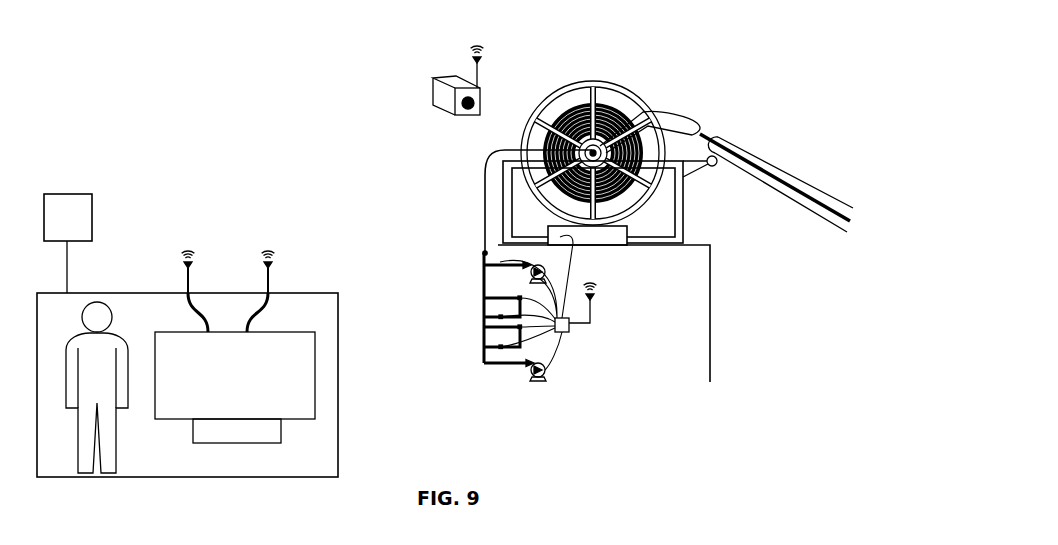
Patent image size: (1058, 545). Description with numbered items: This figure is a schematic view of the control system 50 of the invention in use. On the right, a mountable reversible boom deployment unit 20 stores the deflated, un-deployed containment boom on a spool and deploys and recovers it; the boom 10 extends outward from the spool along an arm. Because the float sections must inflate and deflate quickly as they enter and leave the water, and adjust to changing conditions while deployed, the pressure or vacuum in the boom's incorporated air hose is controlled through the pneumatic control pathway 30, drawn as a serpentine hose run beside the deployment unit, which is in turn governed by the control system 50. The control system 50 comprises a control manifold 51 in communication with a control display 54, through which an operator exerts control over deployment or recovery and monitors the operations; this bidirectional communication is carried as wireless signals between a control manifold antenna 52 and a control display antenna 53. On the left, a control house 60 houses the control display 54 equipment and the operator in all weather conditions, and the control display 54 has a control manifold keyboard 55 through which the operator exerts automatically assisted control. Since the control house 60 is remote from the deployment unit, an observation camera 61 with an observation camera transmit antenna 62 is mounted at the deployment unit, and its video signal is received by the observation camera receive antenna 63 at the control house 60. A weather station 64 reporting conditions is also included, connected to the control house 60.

The irrigation boom arm 10 is at (731, 126).
The mountable reversible boom deployment unit 20 is at (628, 70).
The pneumatic control pathway 30 is at (466, 296).
The control system 50 is at (614, 333).
The control manifold 51 is at (568, 331).
The control manifold antenna 52 is at (596, 296).
The control display antenna 53 is at (274, 262).
The control display 54 is at (235, 375).
The control manifold keyboard 55 is at (237, 431).
The control house 60 is at (358, 377).
The observation camera 61 is at (433, 95).
The observation camera transmit antenna 62 is at (483, 58).
The observation camera receive antenna 63 is at (194, 264).
The weather station 64 is at (88, 218).